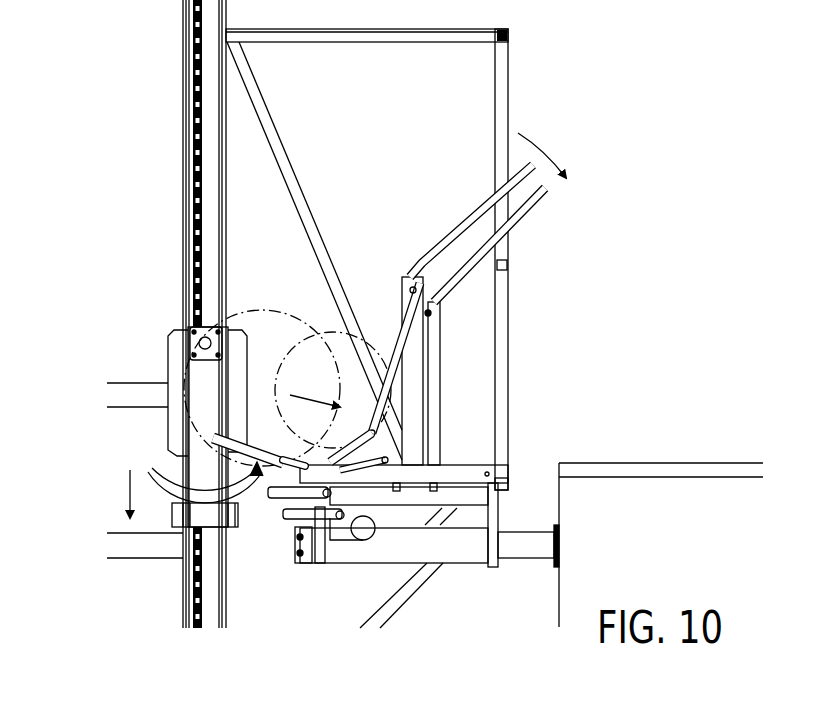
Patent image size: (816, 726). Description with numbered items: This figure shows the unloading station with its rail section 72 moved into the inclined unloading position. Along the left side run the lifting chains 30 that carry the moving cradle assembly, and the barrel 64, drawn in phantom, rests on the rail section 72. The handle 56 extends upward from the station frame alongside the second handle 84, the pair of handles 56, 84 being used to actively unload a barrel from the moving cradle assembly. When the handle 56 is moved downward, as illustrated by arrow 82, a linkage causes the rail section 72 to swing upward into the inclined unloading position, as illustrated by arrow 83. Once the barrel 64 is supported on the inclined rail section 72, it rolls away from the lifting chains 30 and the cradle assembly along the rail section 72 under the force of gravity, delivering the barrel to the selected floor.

The lifting chains 30 is at (193, 158).
The handle 56 is at (475, 210).
The barrel 64 is at (370, 340).
The rail section 72 is at (183, 463).
The arrow 82 is at (543, 153).
The arrow 83 is at (280, 520).
The handle 84 is at (530, 217).